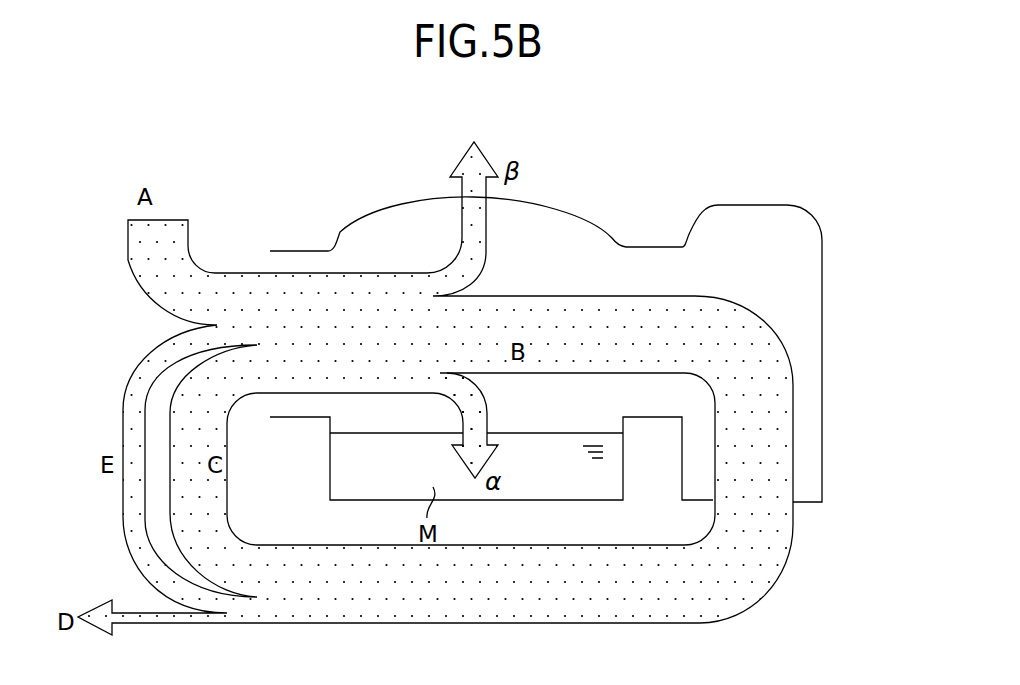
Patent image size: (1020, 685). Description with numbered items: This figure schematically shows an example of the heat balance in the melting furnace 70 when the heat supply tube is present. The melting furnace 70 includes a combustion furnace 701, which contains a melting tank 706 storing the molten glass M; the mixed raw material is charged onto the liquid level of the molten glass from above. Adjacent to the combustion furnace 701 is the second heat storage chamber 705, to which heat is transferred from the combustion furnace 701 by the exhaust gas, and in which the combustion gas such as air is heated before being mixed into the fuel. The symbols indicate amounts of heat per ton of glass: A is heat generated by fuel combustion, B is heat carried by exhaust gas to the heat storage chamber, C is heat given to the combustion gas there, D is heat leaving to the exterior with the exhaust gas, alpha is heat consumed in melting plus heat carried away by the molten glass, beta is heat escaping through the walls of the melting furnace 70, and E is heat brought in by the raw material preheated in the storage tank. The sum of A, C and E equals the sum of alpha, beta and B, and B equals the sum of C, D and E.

The melting furnace 70 is at (367, 178).
The combustion furnace 701 is at (575, 208).
The second heat storage chamber 705 is at (823, 446).
The melting tank 706 is at (585, 502).